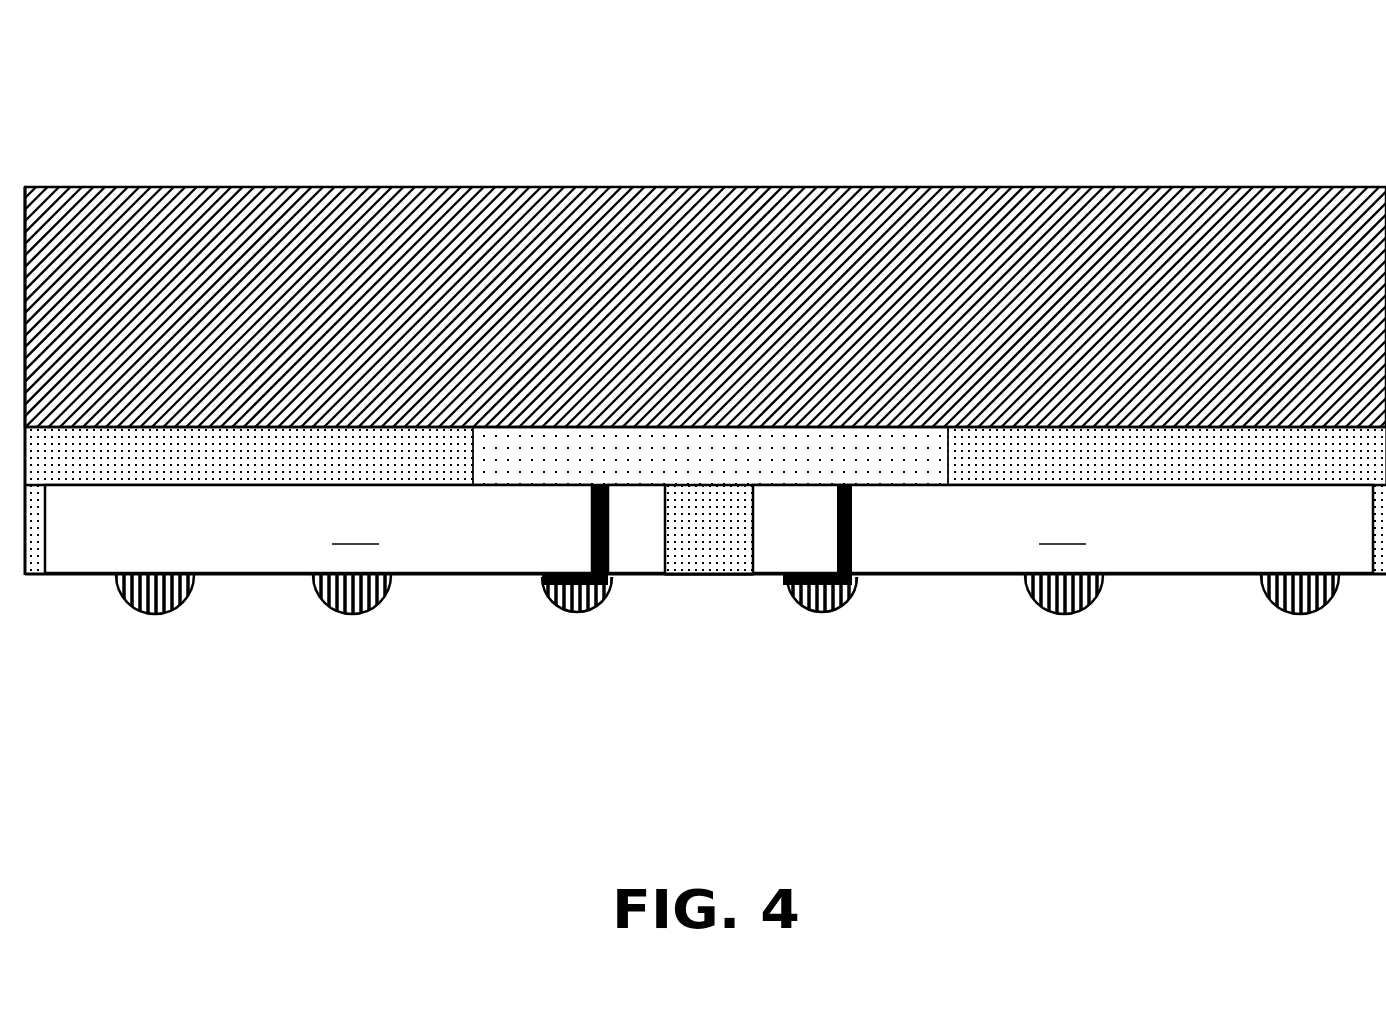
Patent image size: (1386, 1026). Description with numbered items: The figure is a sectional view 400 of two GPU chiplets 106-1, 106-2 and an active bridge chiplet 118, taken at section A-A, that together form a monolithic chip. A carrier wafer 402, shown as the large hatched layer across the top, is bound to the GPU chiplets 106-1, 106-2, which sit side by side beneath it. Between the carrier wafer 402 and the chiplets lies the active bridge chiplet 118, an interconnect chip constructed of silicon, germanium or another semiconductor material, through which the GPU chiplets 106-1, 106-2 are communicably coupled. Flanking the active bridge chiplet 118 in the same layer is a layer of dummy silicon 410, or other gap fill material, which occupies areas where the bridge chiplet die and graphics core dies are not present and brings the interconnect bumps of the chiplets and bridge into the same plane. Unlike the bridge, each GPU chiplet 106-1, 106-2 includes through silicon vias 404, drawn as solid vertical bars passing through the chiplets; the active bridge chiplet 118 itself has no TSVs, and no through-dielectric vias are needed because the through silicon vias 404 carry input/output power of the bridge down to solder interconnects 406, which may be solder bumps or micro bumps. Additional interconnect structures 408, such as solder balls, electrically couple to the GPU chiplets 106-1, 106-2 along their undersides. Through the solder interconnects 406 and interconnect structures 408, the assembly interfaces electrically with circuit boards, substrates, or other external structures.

The view 400 is at (1374, 35).
The carrier wafer 402 is at (1010, 187).
The through silicon vias 404 is at (608, 563).
The solder interconnects 406 is at (600, 602).
The interconnect structures 408 is at (192, 592).
The layer of dummy silicon 410 is at (1148, 461).
The active bridge chiplet 118 is at (726, 461).
The GPU chiplet 106-1 is at (318, 529).
The GPU chiplet 106-2 is at (1063, 529).